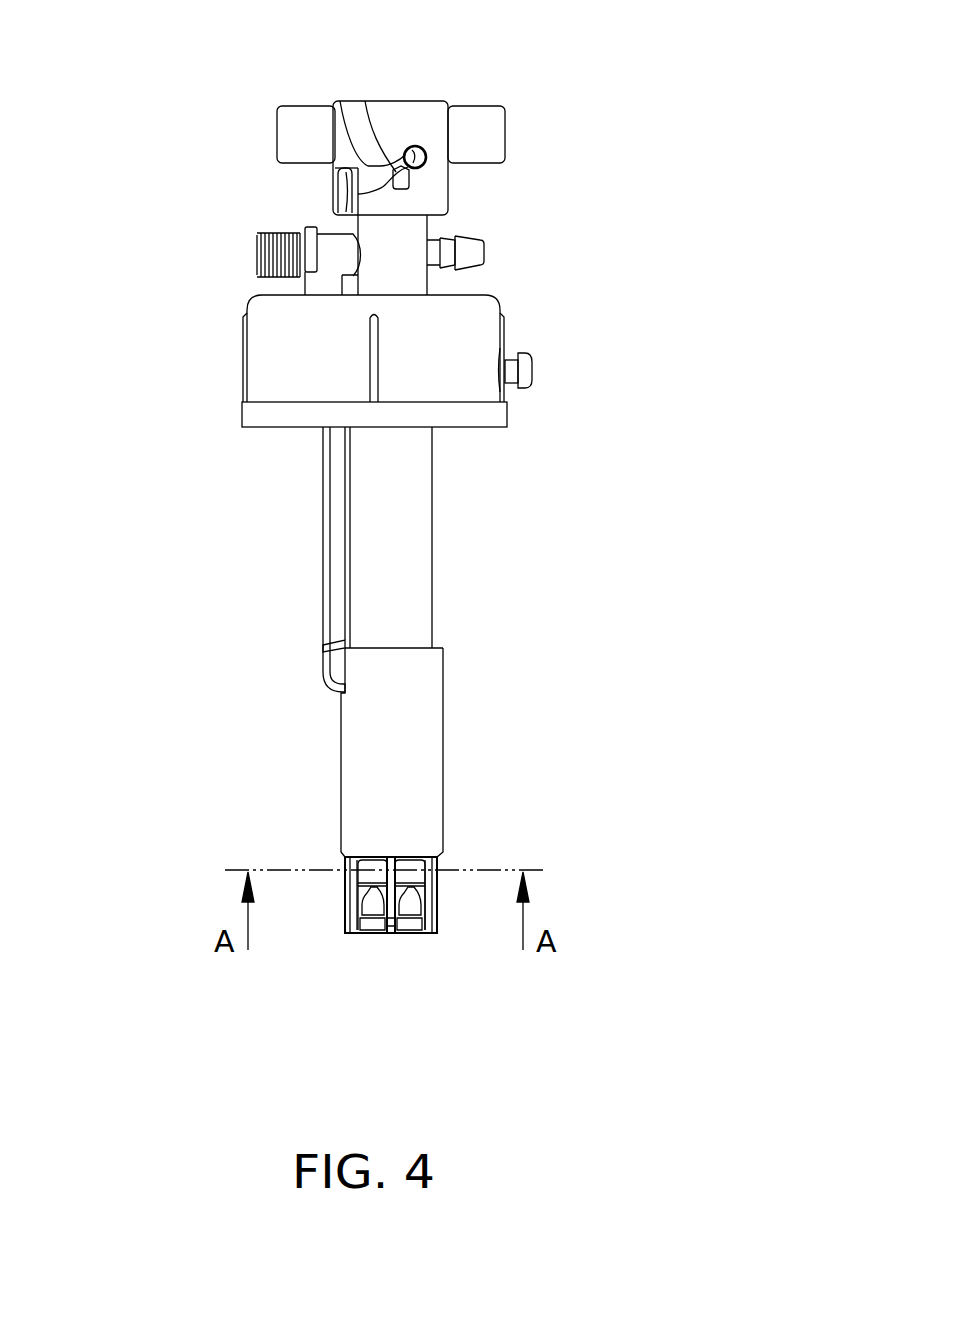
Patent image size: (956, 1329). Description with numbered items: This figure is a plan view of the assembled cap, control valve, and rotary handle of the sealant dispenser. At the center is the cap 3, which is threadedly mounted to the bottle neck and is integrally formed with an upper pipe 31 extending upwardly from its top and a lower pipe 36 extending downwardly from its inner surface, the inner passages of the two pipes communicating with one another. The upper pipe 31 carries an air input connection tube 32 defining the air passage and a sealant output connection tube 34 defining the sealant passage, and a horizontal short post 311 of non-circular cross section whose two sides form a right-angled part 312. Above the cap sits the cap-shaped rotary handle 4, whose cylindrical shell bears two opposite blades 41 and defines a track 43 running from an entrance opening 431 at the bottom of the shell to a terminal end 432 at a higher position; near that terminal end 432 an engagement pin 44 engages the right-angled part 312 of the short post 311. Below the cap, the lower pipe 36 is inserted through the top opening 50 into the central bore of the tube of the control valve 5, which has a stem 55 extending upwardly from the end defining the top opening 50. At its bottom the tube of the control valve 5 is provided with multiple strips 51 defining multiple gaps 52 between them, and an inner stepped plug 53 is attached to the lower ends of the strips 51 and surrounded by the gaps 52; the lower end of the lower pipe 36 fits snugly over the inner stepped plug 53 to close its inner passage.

The cap 3 is at (285, 347).
The rotary handle 4 is at (403, 108).
The control valve 5 is at (428, 757).
The upper pipe 31 is at (395, 279).
The air input connection tube 32 is at (278, 254).
The sealant output connection tube 34 is at (468, 254).
The lower pipe 36 is at (410, 530).
The blades 41 is at (296, 127).
The track 43 is at (335, 108).
The engagement pin 44 is at (368, 108).
The top opening 50 is at (434, 647).
The strips 51 is at (391, 927).
The gaps 52 is at (367, 897).
The inner stepped plug 53 is at (408, 915).
The stem 55 is at (337, 545).
The horizontal short post 311 is at (450, 108).
The right-angled part 312 is at (420, 168).
The entrance opening 431 is at (346, 198).
The terminal end 432 is at (418, 156).